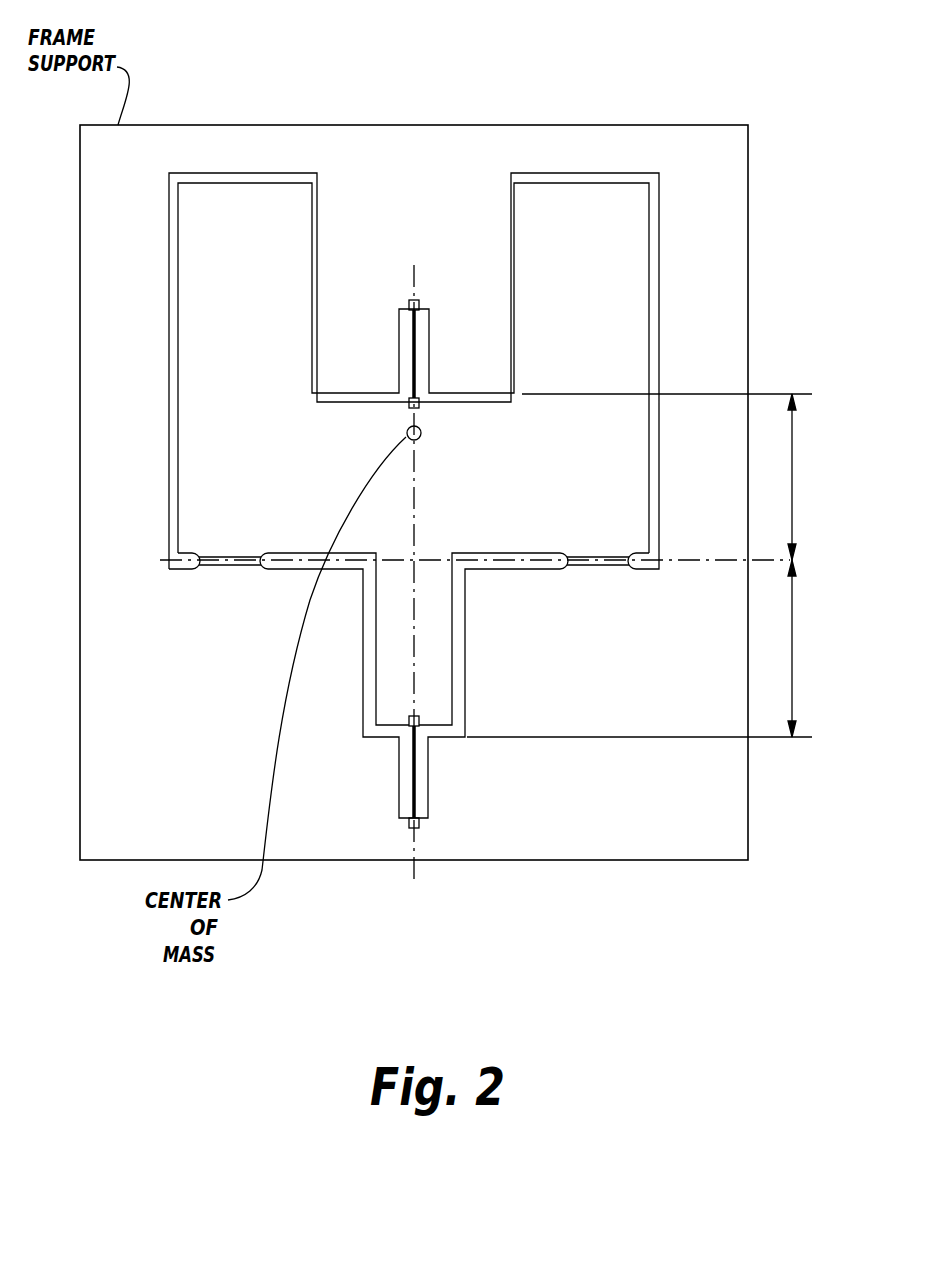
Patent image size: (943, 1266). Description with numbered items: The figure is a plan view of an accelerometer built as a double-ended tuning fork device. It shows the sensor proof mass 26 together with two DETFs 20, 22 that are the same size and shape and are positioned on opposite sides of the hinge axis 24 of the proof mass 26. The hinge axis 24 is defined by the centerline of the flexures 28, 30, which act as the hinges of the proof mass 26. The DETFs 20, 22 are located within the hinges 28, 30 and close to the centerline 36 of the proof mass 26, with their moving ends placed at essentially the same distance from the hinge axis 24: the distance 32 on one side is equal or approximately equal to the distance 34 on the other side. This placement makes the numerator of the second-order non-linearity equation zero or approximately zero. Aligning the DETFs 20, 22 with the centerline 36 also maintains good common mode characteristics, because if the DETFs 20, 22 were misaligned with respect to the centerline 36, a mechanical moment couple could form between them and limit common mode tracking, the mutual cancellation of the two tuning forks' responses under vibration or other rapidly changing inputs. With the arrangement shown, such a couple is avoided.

The DETF 20 is at (416, 357).
The DETF 22 is at (416, 750).
The hinge axis 24 is at (810, 545).
The sensor proof mass 26 is at (580, 452).
The flexure 28 is at (225, 572).
The flexure 30 is at (598, 573).
The distance 32 is at (792, 470).
The distance 34 is at (792, 635).
The centerline 36 is at (413, 870).